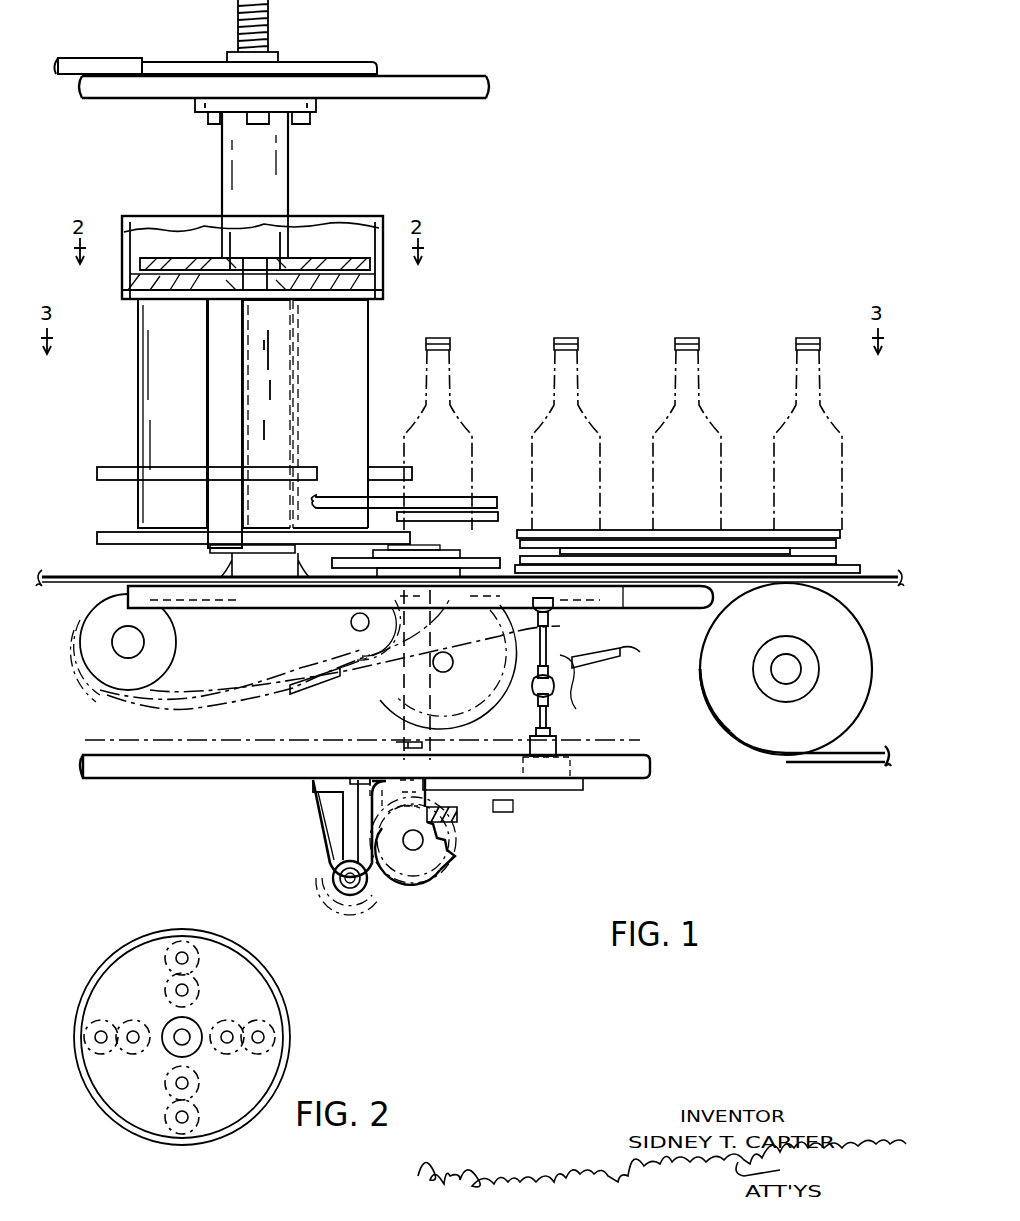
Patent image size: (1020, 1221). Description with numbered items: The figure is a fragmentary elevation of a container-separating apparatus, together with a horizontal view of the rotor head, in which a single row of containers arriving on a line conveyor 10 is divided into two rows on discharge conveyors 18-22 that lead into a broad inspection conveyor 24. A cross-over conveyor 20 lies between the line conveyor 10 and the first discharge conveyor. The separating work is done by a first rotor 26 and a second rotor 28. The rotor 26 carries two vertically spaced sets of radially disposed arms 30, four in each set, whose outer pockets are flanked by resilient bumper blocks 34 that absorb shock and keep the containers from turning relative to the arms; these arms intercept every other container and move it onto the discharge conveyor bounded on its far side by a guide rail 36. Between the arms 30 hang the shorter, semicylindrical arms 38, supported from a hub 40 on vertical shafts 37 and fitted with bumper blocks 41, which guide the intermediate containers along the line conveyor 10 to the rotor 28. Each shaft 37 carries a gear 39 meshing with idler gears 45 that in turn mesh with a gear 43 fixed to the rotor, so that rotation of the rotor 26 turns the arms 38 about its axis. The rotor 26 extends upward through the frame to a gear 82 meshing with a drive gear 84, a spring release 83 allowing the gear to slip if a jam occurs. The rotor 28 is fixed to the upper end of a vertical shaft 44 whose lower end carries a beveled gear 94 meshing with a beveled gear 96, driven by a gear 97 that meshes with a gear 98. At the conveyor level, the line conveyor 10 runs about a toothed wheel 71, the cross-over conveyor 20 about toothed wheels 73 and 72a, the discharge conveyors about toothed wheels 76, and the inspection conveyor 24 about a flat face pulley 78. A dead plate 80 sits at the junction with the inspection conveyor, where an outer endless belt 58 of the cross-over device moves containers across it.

In FIG. 1, the line conveyor 10 is at (84, 739).
In FIG. 1, the discharge conveyors 18-22 is at (575, 688).
In FIG. 1, the cross-over conveyor 20 is at (90, 690).
In FIG. 1, the inspection conveyor 24 is at (832, 762).
In FIG. 1, the rotor 26 is at (265, 382).
In FIG. 1, the rotor 28 is at (446, 554).
In FIG. 1, the radially disposed arms 30 is at (128, 536).
In FIG. 1, the resilient bumper blocks 34 is at (322, 498).
In FIG. 1, the guide rail 36 is at (490, 514).
In FIG. 1, the shafts 37 is at (130, 290).
In FIG. 2, the shafts 37 is at (188, 958).
In FIG. 1, the arms 38 is at (350, 326).
In FIG. 1, the gear 39 is at (140, 260).
In FIG. 2, the gear 39 is at (194, 962).
In FIG. 1, the hub 40 is at (340, 218).
In FIG. 2, the hub 40 is at (290, 1038).
In FIG. 2, the bumper blocks 41 is at (200, 994).
In FIG. 1, the gear 43 is at (280, 258).
In FIG. 2, the gear 43 is at (200, 1062).
In FIG. 1, the shaft 44 is at (428, 612).
In FIG. 1, the idler gears 45 is at (178, 262).
In FIG. 1, the outer endless belt 58 is at (736, 542).
In FIG. 1, the toothed wheel 71 is at (355, 700).
In FIG. 1, the toothed wheel 72a is at (350, 626).
In FIG. 1, the toothed wheel 73 is at (90, 632).
In FIG. 1, the toothed wheels 76 is at (630, 646).
In FIG. 1, the flat face pulley 78 is at (714, 706).
In FIG. 1, the dead plate 80 is at (662, 586).
In FIG. 1, the gear 82 is at (316, 66).
In FIG. 1, the spring release 83 is at (276, 54).
In FIG. 1, the gear 84 is at (100, 60).
In FIG. 1, the beveled gear 94 is at (460, 820).
In FIG. 1, the beveled gear 96 is at (446, 866).
In FIG. 1, the gear 97 is at (424, 894).
In FIG. 1, the gear 98 is at (356, 900).